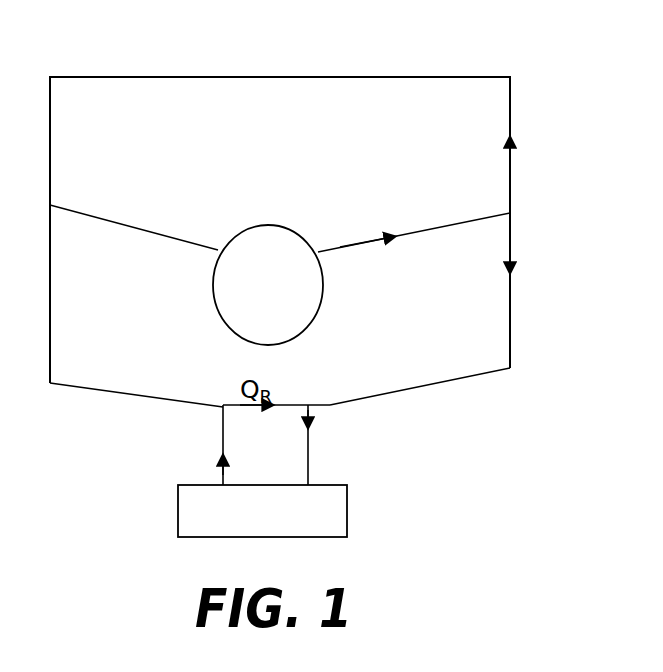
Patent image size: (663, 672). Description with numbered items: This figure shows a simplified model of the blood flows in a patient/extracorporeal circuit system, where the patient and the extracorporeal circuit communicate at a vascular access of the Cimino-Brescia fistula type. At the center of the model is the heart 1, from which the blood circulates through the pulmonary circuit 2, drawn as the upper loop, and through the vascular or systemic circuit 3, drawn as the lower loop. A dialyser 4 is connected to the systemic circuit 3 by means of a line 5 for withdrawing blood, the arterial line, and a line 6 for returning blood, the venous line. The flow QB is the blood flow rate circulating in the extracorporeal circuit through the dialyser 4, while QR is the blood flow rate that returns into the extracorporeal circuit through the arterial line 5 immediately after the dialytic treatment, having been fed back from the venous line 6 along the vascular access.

The heart 1 is at (264, 236).
The pulmonary circuit 2 is at (264, 77).
The vascular or systemic circuit 3 is at (423, 387).
The dialyser 4 is at (348, 510).
The line for withdrawing blood (arterial line) 5 is at (310, 440).
The line for returning blood (venous line) 6 is at (222, 432).